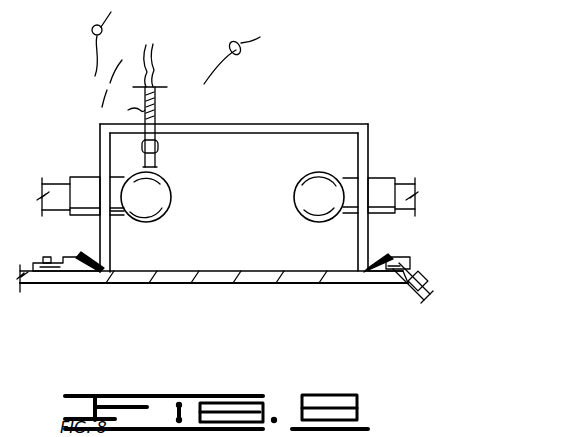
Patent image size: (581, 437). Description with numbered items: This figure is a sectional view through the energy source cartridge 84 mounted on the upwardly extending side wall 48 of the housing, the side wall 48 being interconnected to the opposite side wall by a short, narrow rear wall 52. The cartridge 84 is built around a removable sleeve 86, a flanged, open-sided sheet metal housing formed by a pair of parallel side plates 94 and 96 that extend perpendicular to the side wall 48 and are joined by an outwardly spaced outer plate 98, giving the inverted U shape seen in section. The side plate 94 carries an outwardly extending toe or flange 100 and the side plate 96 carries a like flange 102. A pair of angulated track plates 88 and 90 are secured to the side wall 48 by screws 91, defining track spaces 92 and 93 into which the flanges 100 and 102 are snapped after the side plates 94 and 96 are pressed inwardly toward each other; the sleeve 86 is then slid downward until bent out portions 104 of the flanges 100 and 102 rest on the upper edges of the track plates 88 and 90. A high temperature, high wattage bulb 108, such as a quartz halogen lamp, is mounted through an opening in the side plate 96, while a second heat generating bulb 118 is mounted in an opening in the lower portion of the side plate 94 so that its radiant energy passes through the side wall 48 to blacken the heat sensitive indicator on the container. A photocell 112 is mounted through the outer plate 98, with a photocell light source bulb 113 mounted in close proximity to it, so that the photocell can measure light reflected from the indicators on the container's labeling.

The side wall 48 is at (262, 272).
The rear wall 52 is at (426, 300).
The energy source cartridge 84 is at (231, 160).
The removable sleeve 86 is at (231, 168).
The track plate 88 is at (68, 262).
The track plate 90 is at (402, 258).
The screws 91 is at (44, 258).
The track space 92 is at (83, 272).
The track space 93 is at (390, 274).
The side plate 94 is at (105, 158).
The side plate 96 is at (362, 164).
The outer plate 98 is at (291, 123).
The flange 100 is at (77, 272).
The flange 102 is at (383, 273).
The bent out portions 104 is at (98, 272).
The bulb 108 is at (306, 195).
The photocell 112 is at (155, 96).
The photocell light source bulb 113 is at (158, 117).
The second bulb 118 is at (150, 198).